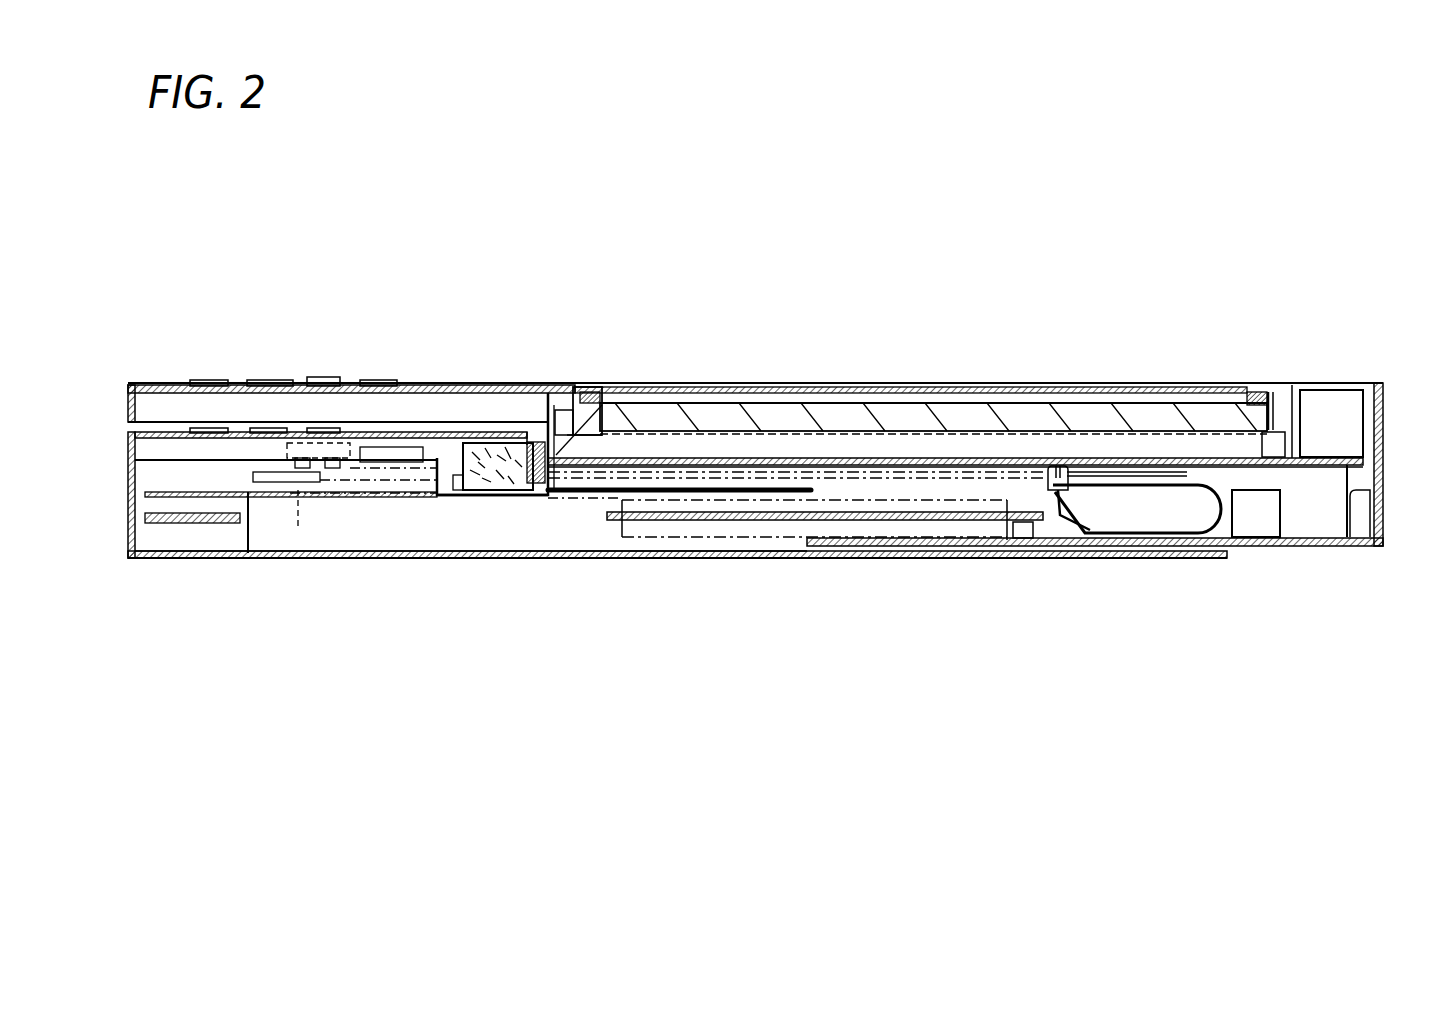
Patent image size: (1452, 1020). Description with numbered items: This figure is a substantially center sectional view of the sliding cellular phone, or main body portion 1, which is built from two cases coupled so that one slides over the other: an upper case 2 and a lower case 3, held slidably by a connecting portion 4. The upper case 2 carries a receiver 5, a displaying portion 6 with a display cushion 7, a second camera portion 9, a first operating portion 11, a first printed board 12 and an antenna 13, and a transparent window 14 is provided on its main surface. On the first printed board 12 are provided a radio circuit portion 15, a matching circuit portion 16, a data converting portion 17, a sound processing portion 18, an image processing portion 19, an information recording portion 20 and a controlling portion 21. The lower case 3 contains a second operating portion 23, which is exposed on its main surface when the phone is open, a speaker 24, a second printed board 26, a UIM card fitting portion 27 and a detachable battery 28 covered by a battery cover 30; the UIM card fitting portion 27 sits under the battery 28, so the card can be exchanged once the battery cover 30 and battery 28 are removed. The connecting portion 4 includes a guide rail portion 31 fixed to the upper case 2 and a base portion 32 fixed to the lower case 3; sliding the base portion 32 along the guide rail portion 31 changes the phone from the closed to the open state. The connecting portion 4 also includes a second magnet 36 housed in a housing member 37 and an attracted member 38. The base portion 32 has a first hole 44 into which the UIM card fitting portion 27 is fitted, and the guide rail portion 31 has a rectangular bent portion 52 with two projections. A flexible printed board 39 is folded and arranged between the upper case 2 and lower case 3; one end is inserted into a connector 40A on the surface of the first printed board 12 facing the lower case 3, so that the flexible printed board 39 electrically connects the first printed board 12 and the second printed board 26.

The main body portion 1 is at (1386, 400).
The upper case 2 is at (440, 385).
The lower case 3 is at (188, 550).
The connecting portion 4 is at (790, 490).
The receiver 5 is at (1330, 392).
The displaying portion 6 is at (745, 415).
The display cushion 7 is at (1258, 393).
The second camera portion 9 is at (1258, 530).
The first operating portion 11 is at (263, 430).
The first printed board 12 is at (1222, 458).
The antenna 13 is at (1380, 497).
The transparent window 14 is at (1107, 383).
The radio circuit portion 15 is at (867, 329).
The matching circuit portion 16 is at (867, 329).
The data converting portion 17 is at (867, 329).
The sound processing portion 18 is at (867, 329).
The image processing portion 19 is at (867, 329).
The information recording portion 20 is at (867, 329).
The controlling portion 21 is at (945, 455).
The second operating portion 23 is at (220, 388).
The speaker 24 is at (1020, 387).
The second printed board 26 is at (950, 520).
The UIM card fitting portion 27 is at (372, 460).
The battery 28 is at (351, 548).
The battery cover 30 is at (425, 556).
The guide rail portion 31 is at (580, 387).
The base portion 32 is at (538, 498).
The second magnet 36 is at (473, 385).
The housing member 37 is at (493, 385).
The attracted member 38 is at (545, 385).
The flexible printed board 39 is at (1140, 533).
The connector 40A is at (1060, 495).
The first hole 44 is at (298, 552).
The rectangular bent portion 52 is at (606, 385).